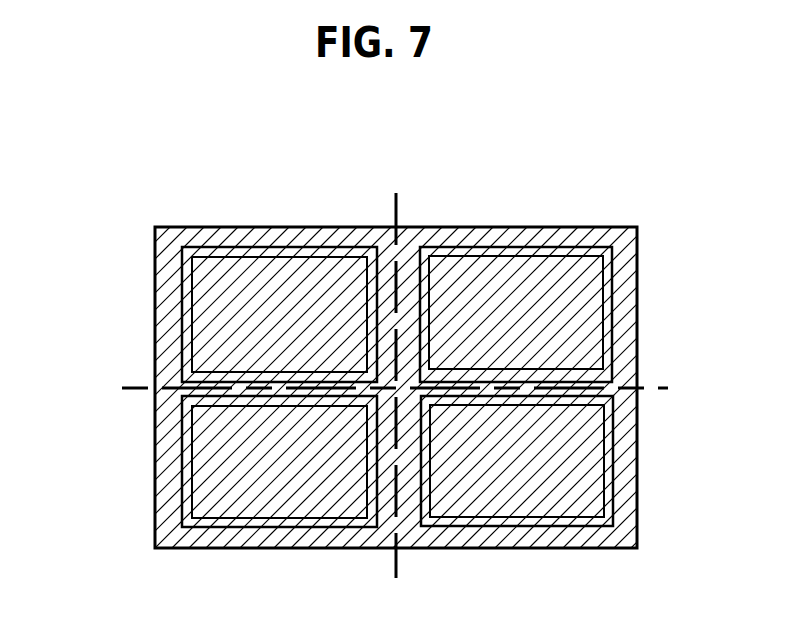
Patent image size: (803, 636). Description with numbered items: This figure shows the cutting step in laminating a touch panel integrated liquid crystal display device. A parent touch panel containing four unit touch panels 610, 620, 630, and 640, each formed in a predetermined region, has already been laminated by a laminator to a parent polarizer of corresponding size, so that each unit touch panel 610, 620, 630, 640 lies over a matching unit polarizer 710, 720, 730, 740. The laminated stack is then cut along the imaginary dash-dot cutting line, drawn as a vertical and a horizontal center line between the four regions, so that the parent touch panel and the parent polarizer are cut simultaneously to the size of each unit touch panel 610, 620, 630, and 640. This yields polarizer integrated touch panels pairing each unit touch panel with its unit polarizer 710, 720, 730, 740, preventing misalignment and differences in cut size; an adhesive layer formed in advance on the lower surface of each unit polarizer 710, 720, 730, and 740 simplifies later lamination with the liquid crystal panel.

The unit touch panel 610 is at (203, 322).
The unit touch panel 620 is at (595, 325).
The unit touch panel 630 is at (205, 481).
The unit touch panel 640 is at (595, 478).
The unit polarizer 710 is at (166, 280).
The unit polarizer 720 is at (637, 282).
The unit polarizer 730 is at (168, 440).
The unit polarizer 740 is at (625, 438).